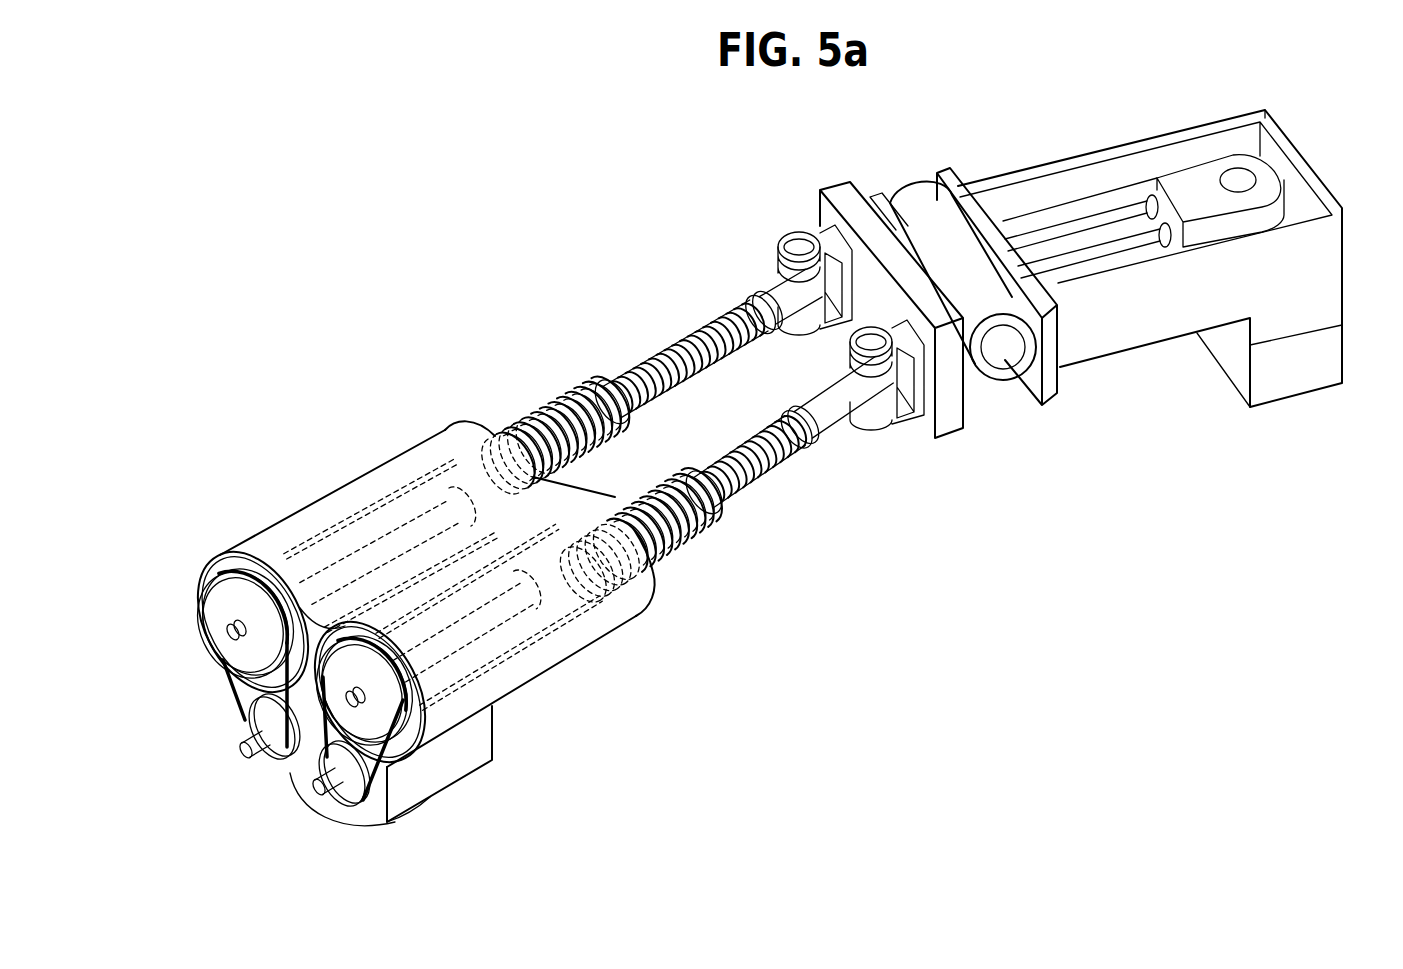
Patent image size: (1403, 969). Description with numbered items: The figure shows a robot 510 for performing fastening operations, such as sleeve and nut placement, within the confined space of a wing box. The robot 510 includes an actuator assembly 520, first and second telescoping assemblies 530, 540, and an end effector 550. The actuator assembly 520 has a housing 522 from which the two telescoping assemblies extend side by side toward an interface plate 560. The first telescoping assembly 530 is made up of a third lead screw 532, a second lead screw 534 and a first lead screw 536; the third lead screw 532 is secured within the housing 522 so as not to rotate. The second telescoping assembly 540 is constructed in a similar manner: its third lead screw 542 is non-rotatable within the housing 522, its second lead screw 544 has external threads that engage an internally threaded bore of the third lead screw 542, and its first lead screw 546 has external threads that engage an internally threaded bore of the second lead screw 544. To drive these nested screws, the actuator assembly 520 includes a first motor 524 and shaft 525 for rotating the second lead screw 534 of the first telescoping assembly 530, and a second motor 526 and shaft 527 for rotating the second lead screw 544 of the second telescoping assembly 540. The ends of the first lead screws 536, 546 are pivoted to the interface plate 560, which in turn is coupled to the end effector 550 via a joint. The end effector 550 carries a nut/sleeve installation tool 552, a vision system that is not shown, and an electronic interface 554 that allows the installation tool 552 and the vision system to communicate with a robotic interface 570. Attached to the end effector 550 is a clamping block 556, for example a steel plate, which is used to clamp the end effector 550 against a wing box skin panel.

The robot 510 is at (436, 173).
The actuator assembly 520 is at (243, 540).
The housing 522 is at (325, 497).
The first motor 524 is at (276, 765).
The shaft 525 is at (401, 514).
The second motor 526 is at (340, 799).
The shaft 527 is at (473, 647).
The first telescoping assembly 530 is at (628, 369).
The third lead screw 532 is at (431, 462).
The second lead screw 534 is at (527, 416).
The first lead screw 536 is at (692, 335).
The second telescoping assembly 540 is at (753, 483).
The third lead screw 542 is at (531, 652).
The second lead screw 544 is at (683, 551).
The first lead screw 546 is at (811, 446).
The end effector 550 is at (1220, 117).
The nut/sleeve installation tool 552 is at (1257, 182).
The electronic interface 554 is at (955, 178).
The clamping block 556 is at (1313, 388).
The interface plate 560 is at (830, 182).
The robotic interface 570 is at (455, 782).